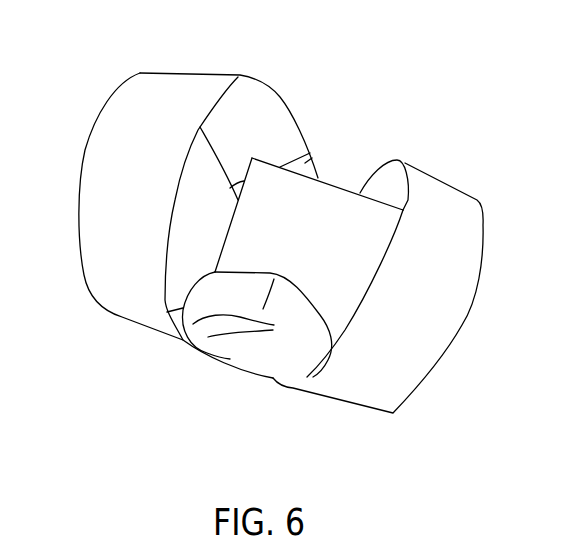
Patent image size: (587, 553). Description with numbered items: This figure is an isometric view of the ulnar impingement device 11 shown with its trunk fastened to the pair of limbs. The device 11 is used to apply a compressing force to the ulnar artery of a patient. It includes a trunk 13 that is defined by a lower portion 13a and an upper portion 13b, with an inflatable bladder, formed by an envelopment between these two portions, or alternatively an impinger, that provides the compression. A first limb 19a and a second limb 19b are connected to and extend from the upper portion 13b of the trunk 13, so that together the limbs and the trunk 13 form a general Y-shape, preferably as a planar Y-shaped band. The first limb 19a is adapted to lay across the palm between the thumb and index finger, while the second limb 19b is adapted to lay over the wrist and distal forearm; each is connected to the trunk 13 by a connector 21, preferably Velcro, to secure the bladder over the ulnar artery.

The device 11 is at (429, 79).
The trunk 13 is at (342, 262).
The lower portion 13a is at (320, 202).
The upper portion 13b is at (195, 343).
The first limb 19a is at (137, 90).
The second limb 19b is at (427, 185).
The connector 21 is at (318, 158).